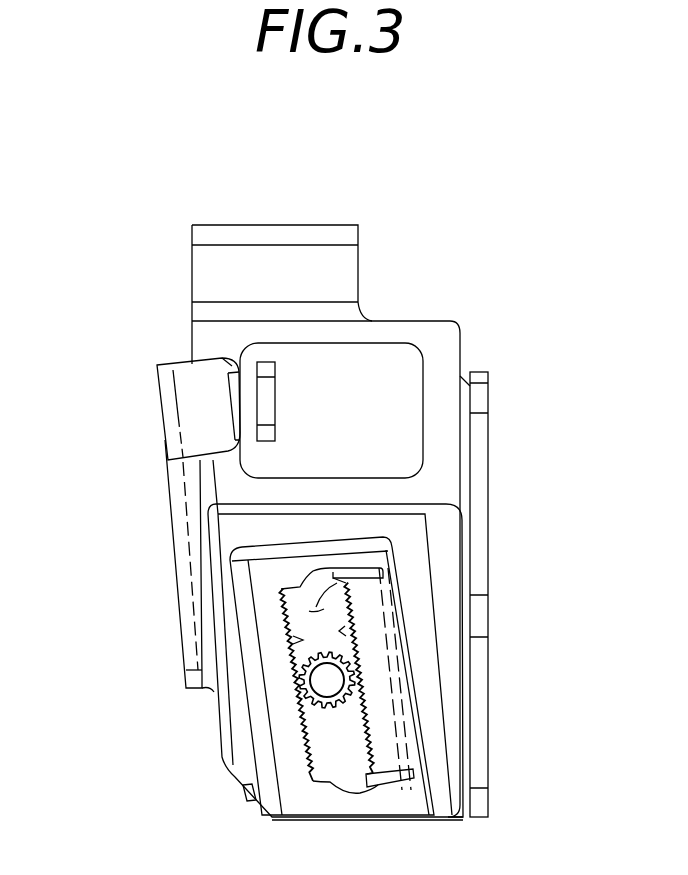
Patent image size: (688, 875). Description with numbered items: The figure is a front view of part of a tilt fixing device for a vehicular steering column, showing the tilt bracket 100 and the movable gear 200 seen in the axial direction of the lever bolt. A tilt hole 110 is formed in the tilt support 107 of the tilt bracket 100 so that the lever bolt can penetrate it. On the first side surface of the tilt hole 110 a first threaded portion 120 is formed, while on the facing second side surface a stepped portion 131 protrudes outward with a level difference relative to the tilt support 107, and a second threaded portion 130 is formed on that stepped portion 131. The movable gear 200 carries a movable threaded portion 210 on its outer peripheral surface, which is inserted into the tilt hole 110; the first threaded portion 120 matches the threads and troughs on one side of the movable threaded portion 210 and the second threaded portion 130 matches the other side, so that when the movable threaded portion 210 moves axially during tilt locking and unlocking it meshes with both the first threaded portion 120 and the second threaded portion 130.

The tilt bracket 100 is at (103, 219).
The tilt support 107 is at (317, 803).
The tilt hole 110 is at (395, 590).
The first threaded portion 120 is at (300, 638).
The second threaded portion 130 is at (347, 635).
The stepped portion 131 is at (383, 702).
The movable gear 200 is at (337, 703).
The movable threaded portion 210 is at (332, 705).